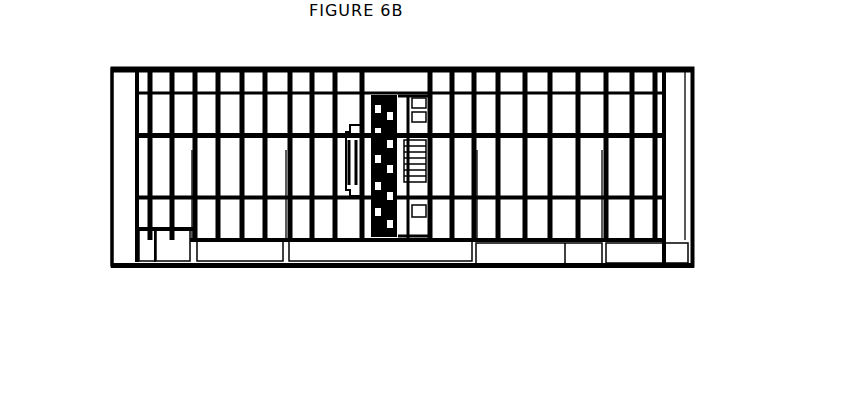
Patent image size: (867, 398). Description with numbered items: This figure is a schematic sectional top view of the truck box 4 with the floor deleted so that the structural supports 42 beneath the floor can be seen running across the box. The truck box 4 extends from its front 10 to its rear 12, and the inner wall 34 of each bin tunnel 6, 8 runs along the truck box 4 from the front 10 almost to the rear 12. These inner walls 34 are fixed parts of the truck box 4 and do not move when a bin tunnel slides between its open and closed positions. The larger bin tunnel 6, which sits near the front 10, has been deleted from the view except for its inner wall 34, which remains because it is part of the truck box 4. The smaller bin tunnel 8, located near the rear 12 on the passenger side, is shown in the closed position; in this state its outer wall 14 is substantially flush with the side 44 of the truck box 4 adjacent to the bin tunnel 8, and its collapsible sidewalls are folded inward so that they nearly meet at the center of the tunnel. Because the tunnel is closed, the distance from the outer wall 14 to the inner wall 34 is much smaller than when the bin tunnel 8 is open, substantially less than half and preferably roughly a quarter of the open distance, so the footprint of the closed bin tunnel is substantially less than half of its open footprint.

The truck box 4 is at (331, 68).
The structural supports 42 is at (585, 134).
The front 10 is at (694, 133).
The rear 12 is at (110, 192).
The bin tunnel 8 is at (151, 268).
The outer wall 14 is at (179, 268).
The side 44 is at (336, 270).
The bin tunnel 6 is at (519, 272).
The inner wall 34 is at (155, 262).